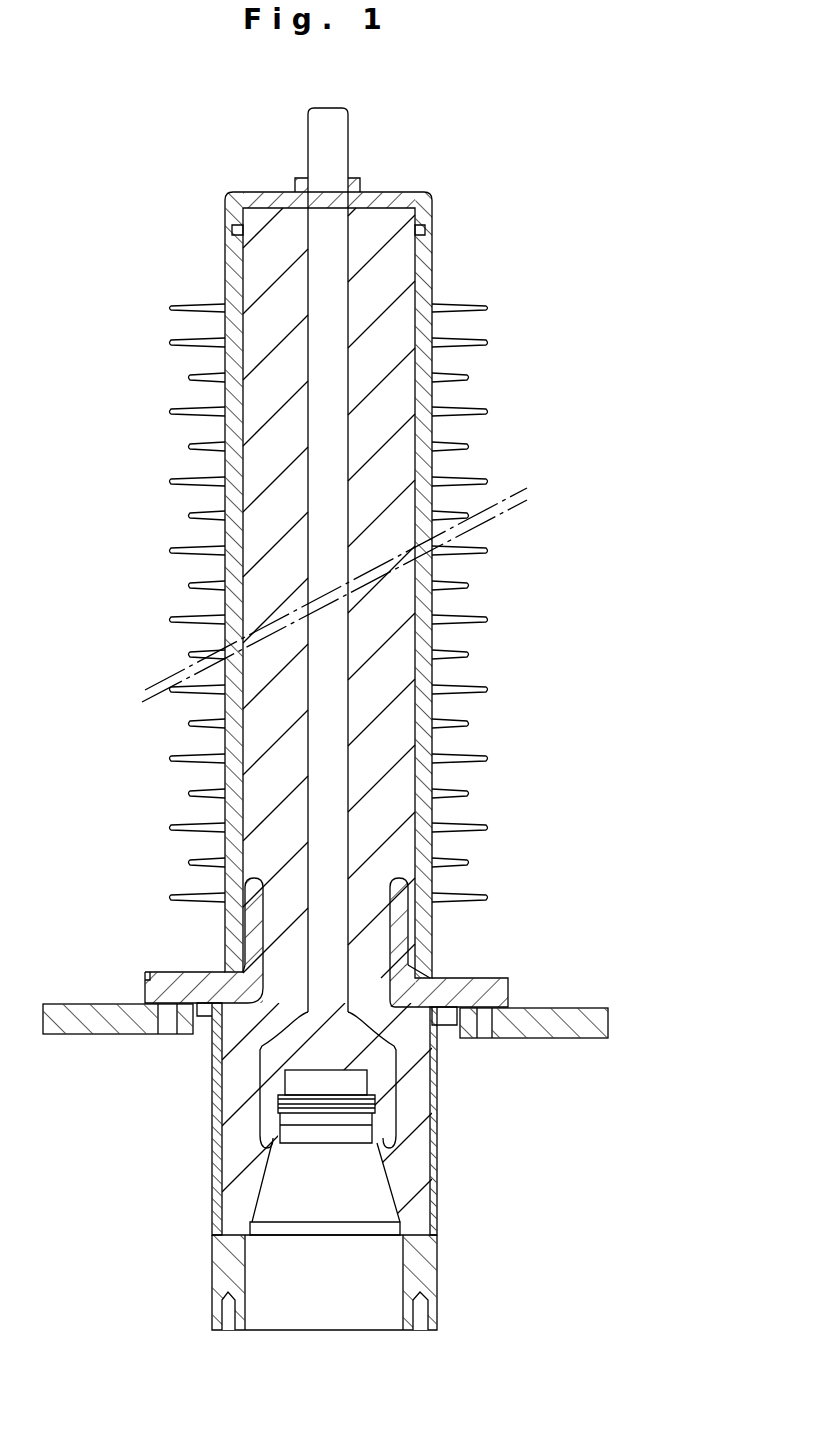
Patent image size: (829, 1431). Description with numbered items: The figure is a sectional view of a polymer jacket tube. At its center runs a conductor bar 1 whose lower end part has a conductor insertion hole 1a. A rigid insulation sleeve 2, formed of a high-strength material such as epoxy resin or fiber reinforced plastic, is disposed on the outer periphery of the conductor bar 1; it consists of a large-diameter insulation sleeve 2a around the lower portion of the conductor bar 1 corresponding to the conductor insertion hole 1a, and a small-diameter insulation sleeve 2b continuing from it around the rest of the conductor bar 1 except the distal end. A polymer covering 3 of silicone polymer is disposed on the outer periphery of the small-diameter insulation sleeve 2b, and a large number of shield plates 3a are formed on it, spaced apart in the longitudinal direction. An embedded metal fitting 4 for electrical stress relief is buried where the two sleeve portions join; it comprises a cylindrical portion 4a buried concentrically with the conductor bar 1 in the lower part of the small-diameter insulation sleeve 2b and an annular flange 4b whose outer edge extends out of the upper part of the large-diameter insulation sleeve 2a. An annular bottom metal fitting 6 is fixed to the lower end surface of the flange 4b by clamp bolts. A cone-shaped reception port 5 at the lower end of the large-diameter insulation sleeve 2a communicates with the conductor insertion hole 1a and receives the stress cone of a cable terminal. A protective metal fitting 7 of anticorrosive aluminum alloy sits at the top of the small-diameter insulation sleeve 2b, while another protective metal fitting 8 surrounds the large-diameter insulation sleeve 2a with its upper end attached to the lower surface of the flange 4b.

The conductor bar 1 is at (333, 165).
The conductor insertion hole 1a is at (364, 1083).
The rigid insulation sleeve 2 is at (394, 715).
The large-diameter insulation sleeve 2a is at (412, 1170).
The small-diameter insulation sleeve 2b is at (383, 370).
The polymer covering 3 is at (381, 603).
The shield plate 3a is at (490, 695).
The embedded metal fitting 4 is at (360, 942).
The cylindrical portion 4a is at (398, 938).
The annular flange 4b is at (460, 985).
The cone-shaped reception port 5 is at (262, 1207).
The annular bottom metal fitting 6 is at (560, 1020).
The protective metal fitting 7 is at (272, 200).
The protective metal fitting 8 is at (212, 1125).